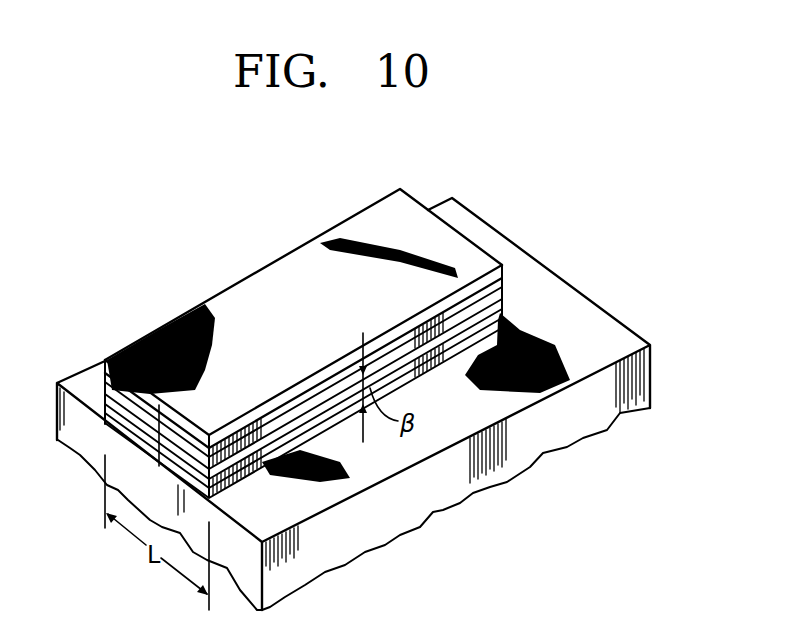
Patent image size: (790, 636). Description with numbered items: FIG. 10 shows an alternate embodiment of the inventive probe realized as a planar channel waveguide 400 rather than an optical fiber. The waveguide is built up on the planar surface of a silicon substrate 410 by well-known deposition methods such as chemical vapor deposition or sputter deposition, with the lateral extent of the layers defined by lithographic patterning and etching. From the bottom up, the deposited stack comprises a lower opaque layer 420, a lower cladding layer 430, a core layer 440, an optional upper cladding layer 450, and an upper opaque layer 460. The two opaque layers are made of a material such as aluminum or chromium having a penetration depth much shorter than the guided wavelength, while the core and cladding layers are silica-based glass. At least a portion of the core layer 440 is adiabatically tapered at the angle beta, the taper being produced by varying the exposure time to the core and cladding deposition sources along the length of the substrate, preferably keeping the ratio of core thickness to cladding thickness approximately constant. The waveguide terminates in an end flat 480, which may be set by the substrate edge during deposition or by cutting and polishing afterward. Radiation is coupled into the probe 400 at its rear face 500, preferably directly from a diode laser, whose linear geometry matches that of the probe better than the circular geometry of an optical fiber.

The channel waveguide 400 is at (295, 333).
The silicon substrate 410 is at (433, 508).
The lower opaque layer 420 is at (250, 482).
The lower cladding layer 430 is at (98, 396).
The core layer 440 is at (507, 317).
The upper cladding layer 450 is at (103, 368).
The upper opaque layer 460 is at (225, 300).
The end flat 480 is at (148, 436).
The rear face 500 is at (375, 212).